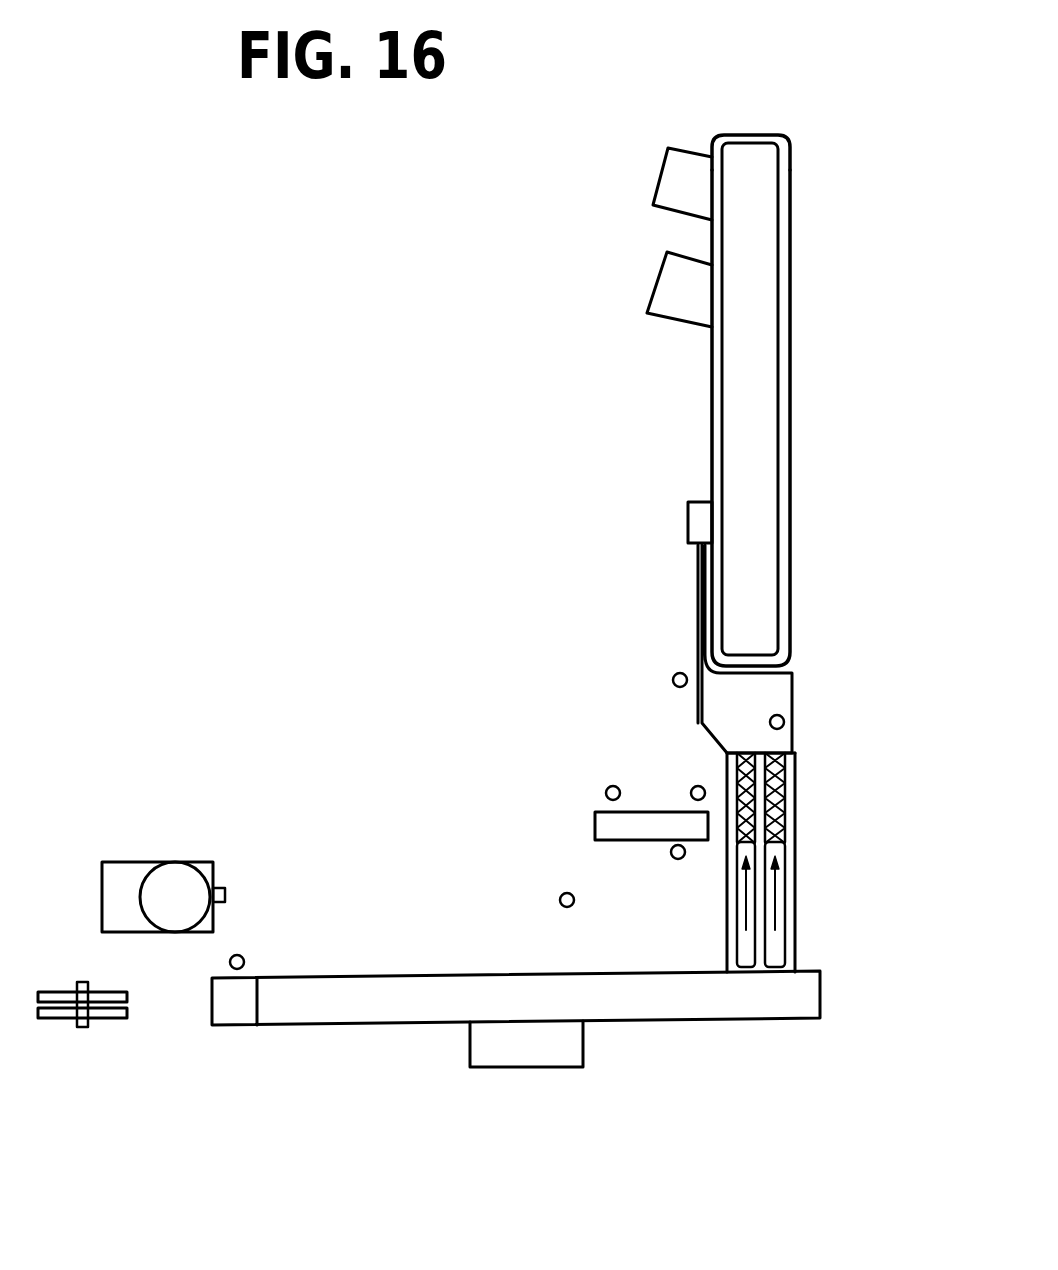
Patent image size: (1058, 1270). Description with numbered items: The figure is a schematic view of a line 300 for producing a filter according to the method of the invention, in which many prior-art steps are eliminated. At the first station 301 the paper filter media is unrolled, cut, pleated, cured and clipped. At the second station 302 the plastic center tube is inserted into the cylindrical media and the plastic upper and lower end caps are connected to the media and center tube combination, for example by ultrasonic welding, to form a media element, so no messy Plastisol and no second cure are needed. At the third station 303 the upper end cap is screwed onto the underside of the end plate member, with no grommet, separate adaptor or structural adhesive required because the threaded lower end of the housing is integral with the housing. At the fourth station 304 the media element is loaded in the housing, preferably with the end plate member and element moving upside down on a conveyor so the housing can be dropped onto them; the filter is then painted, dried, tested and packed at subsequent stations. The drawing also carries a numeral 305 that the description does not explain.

The line 300 is at (383, 567).
The first station 301 is at (412, 1012).
The second station 302 is at (780, 978).
The third station 303 is at (773, 651).
The fourth station 304 is at (790, 308).
The housing top 305 is at (790, 163).